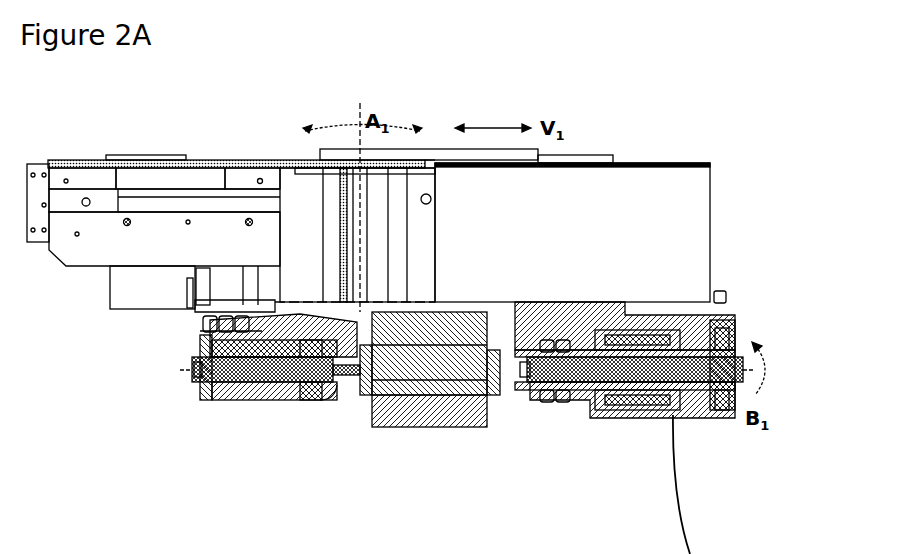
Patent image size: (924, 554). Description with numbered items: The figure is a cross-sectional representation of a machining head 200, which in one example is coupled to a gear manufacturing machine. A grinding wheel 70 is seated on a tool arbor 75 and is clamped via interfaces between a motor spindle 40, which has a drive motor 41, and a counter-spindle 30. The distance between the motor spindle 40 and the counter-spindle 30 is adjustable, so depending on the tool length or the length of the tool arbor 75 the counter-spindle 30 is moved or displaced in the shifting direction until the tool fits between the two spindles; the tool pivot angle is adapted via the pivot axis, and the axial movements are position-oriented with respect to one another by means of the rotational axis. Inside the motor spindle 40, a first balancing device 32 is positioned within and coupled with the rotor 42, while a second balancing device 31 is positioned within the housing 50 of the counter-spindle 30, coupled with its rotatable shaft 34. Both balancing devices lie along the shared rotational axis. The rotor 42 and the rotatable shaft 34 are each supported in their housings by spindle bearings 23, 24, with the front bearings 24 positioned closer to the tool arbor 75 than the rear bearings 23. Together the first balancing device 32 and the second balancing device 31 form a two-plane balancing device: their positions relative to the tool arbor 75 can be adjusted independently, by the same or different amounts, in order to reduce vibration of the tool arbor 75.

The machining head 200 is at (613, 97).
The spindle bearings 23 is at (232, 400).
The spindle bearings 24 is at (312, 400).
The counter-spindle 30 is at (265, 400).
The second balancing device 31 is at (212, 392).
The first balancing device 32 is at (690, 410).
The rotatable shaft 34 is at (285, 400).
The motor spindle 40 is at (600, 418).
The drive motor 41 is at (650, 410).
The rotor 42 is at (620, 418).
The housing 50 is at (250, 400).
The grinding wheel 70 is at (413, 427).
The tool arbor 75 is at (465, 428).